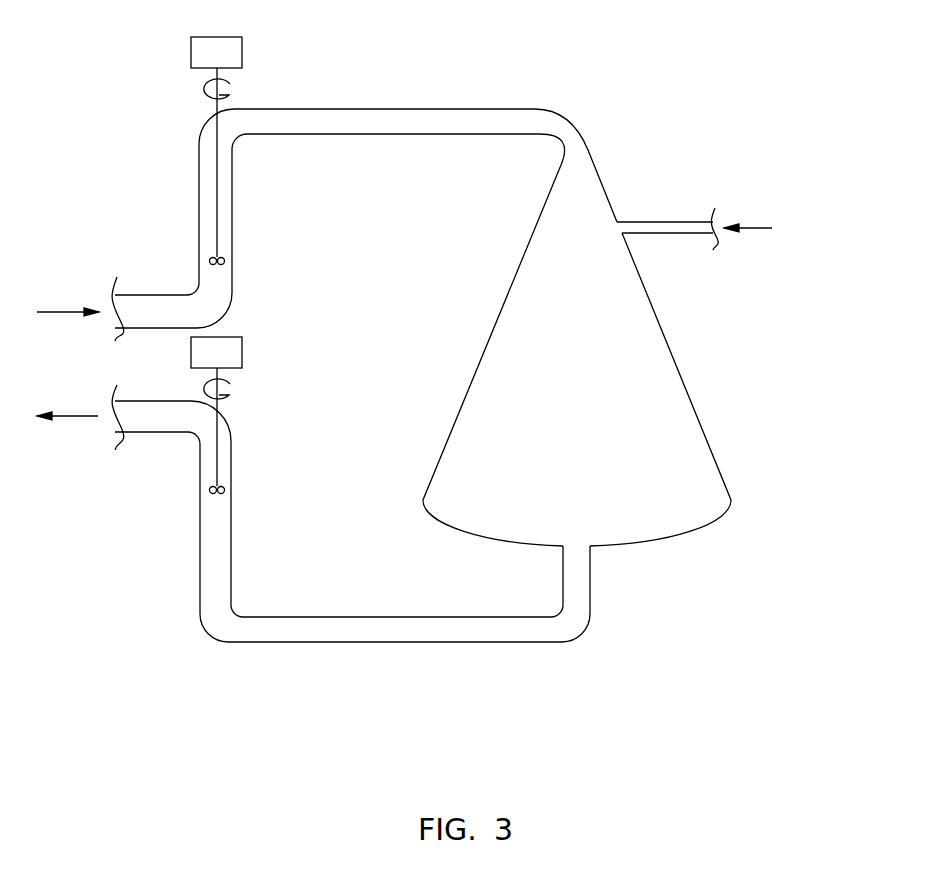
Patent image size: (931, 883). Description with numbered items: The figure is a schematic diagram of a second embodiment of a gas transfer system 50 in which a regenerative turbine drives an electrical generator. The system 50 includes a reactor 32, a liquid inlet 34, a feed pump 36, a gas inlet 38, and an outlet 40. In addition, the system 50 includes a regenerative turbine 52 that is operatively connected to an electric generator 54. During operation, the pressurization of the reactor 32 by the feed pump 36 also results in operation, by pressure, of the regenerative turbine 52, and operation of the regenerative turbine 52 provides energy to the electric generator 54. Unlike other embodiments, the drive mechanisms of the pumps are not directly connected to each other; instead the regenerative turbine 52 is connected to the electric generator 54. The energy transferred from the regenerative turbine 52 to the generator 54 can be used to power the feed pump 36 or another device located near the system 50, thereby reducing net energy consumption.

The reactor 32 is at (680, 372).
The liquid inlet 34 is at (460, 109).
The feed pump 36 is at (242, 52).
The gas inlet 38 is at (662, 233).
The outlet 40 is at (477, 642).
The gas transfer system 50 is at (468, 371).
The regenerative turbine 52 is at (220, 434).
The electric generator 54 is at (242, 352).